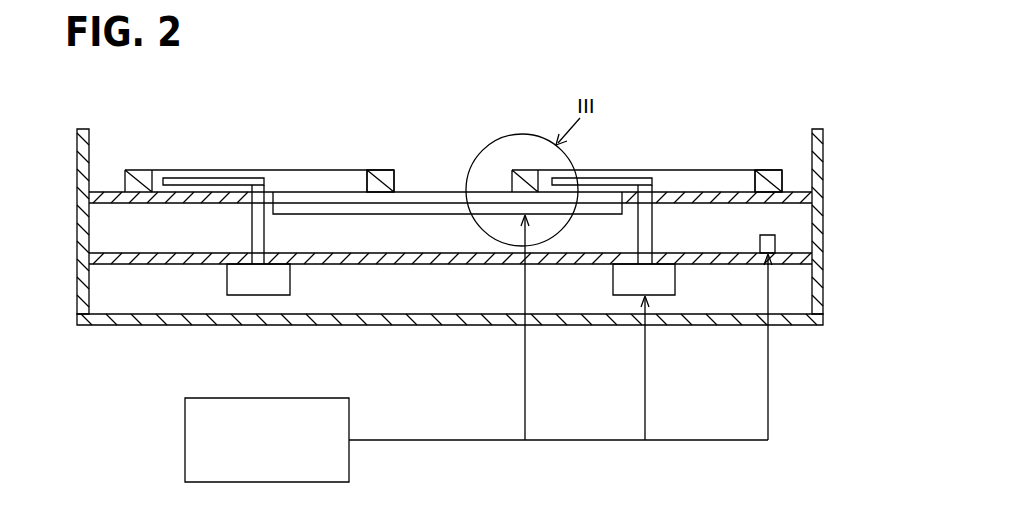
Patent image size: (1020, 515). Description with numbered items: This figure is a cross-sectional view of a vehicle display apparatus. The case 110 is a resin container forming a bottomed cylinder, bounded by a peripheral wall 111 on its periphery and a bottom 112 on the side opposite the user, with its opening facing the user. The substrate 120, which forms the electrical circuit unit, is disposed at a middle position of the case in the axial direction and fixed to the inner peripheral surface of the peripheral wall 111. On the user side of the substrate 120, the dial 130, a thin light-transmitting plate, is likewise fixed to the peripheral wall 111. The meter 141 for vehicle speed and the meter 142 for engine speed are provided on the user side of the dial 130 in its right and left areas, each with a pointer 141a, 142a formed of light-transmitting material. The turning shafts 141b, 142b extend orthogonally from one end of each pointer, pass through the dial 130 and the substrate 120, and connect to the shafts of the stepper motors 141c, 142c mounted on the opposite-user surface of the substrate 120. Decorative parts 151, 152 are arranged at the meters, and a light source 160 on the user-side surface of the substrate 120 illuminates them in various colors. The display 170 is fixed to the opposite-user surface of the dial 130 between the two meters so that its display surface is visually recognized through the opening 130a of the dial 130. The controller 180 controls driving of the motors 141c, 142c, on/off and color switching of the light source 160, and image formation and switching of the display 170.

The case 110 is at (426, 250).
The peripheral wall 111 is at (77, 214).
The bottom 112 is at (110, 326).
The substrate 120 is at (103, 253).
The dial 130 is at (450, 166).
The opening 130a is at (283, 197).
The meter 141 is at (647, 200).
The pointer 141a is at (606, 180).
The turning shaft 141b is at (638, 230).
The motor 141c is at (675, 283).
The meter 142 is at (259, 201).
The pointer 142a is at (203, 180).
The turning shaft 142b is at (252, 230).
The motor 142c is at (290, 283).
The decorative part 151 is at (758, 170).
The decorative part 152 is at (378, 170).
The light source 160 is at (760, 243).
The display 170 is at (330, 214).
The controller 180 is at (220, 398).